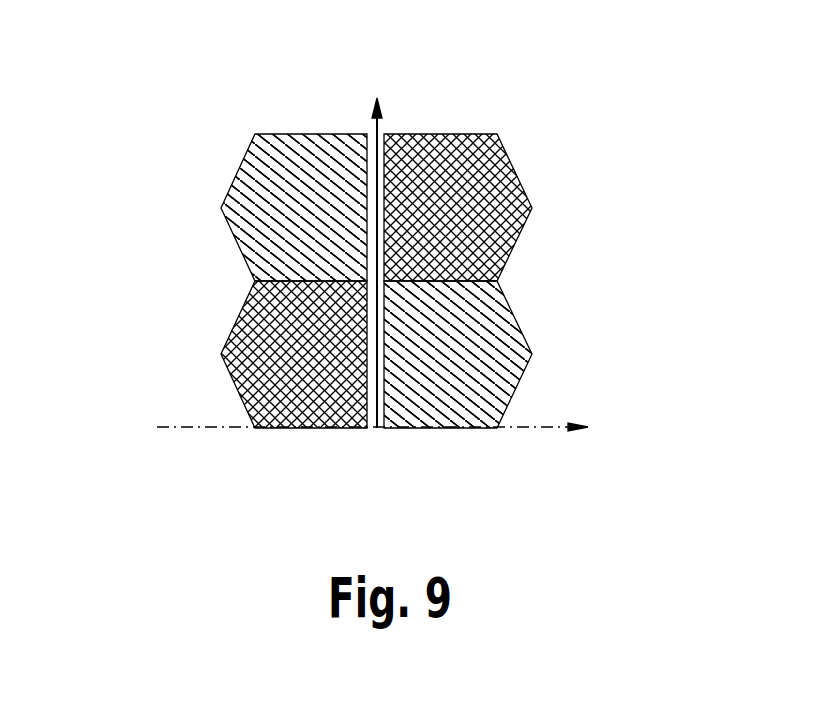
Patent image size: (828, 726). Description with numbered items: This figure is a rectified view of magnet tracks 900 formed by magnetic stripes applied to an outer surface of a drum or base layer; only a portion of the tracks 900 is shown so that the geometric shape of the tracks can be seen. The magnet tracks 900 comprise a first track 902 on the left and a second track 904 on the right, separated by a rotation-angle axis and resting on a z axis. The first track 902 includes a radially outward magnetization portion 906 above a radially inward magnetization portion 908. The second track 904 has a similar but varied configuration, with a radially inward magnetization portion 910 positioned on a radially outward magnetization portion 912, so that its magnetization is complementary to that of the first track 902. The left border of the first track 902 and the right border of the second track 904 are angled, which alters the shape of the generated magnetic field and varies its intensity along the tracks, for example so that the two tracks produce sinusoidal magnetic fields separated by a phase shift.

The magnet tracks 900 is at (340, 313).
The first track 902 is at (250, 328).
The second track 904 is at (495, 328).
The radially outward magnetization portion/strip 906 is at (231, 186).
The radially inward magnetization portion/strip 908 is at (233, 380).
The radially inward magnetization portion/strip 910 is at (526, 193).
The radially outward magnetization portion/strip 912 is at (521, 330).